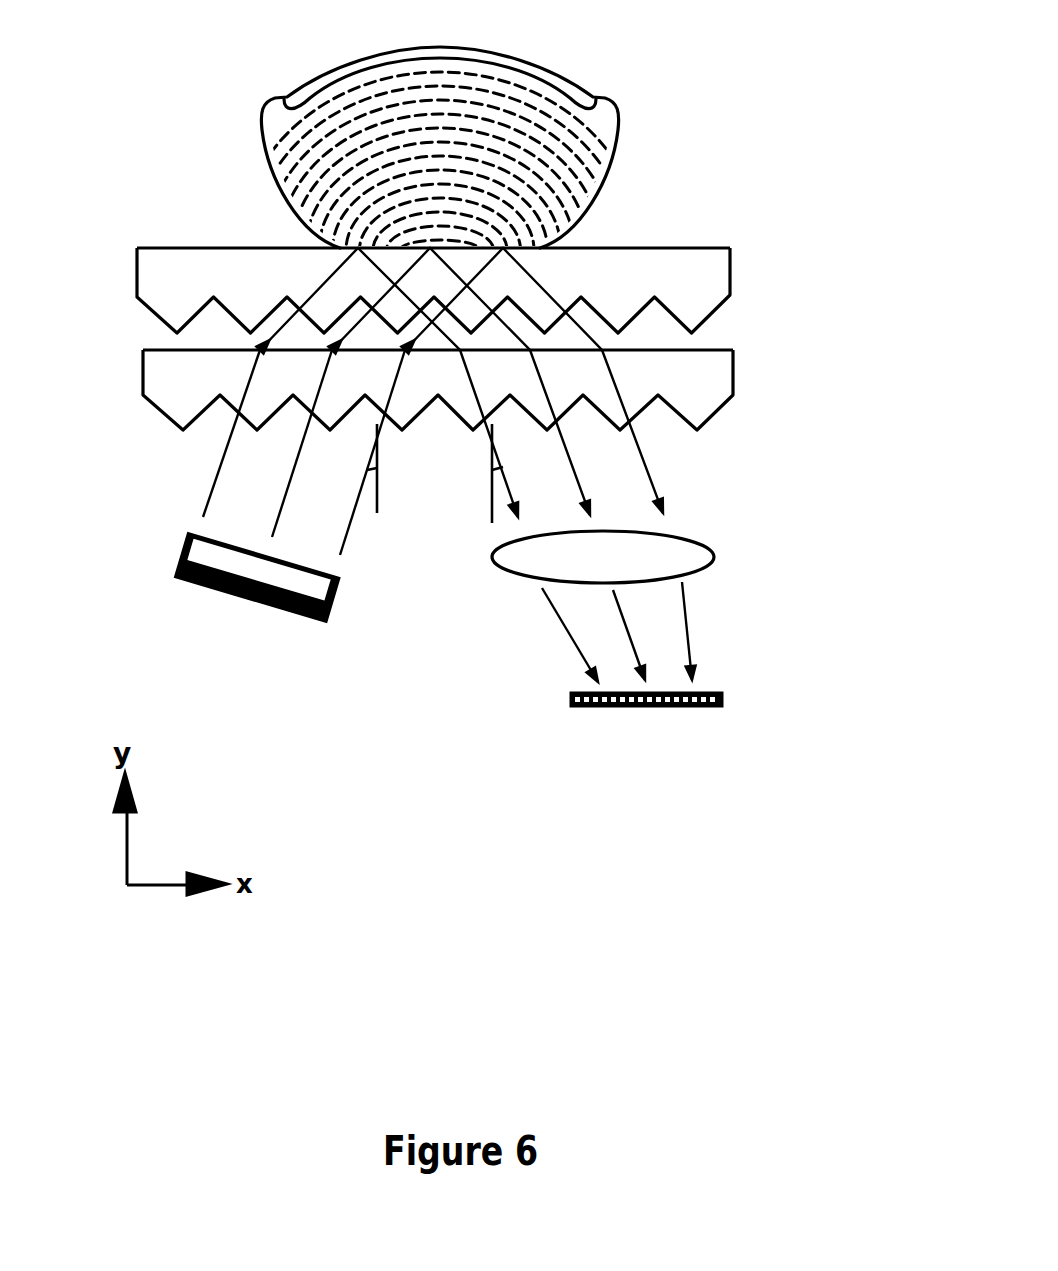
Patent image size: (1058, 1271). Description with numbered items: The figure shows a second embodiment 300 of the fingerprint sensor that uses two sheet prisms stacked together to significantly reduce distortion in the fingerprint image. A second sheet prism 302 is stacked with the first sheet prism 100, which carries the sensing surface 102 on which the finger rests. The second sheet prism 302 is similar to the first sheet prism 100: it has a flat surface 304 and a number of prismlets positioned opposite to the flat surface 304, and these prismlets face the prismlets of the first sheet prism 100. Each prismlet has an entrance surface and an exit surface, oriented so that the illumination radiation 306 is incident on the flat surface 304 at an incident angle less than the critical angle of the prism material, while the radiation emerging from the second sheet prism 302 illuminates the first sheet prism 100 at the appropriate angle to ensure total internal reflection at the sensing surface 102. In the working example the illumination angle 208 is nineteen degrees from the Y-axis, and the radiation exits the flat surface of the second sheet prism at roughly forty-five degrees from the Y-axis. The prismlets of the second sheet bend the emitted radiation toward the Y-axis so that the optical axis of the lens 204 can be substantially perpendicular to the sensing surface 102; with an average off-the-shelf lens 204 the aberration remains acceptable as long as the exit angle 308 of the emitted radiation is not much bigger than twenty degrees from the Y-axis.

The second embodiment 300 is at (795, 188).
The sensing surface 102 is at (636, 243).
The first sheet prism 100 is at (693, 292).
The flat surface 304 is at (158, 348).
The second sheet prism 302 is at (748, 373).
The illumination radiation 306 is at (212, 487).
The illumination angle 208 is at (367, 480).
The exit angle 308 is at (493, 518).
The lens 204 is at (690, 558).